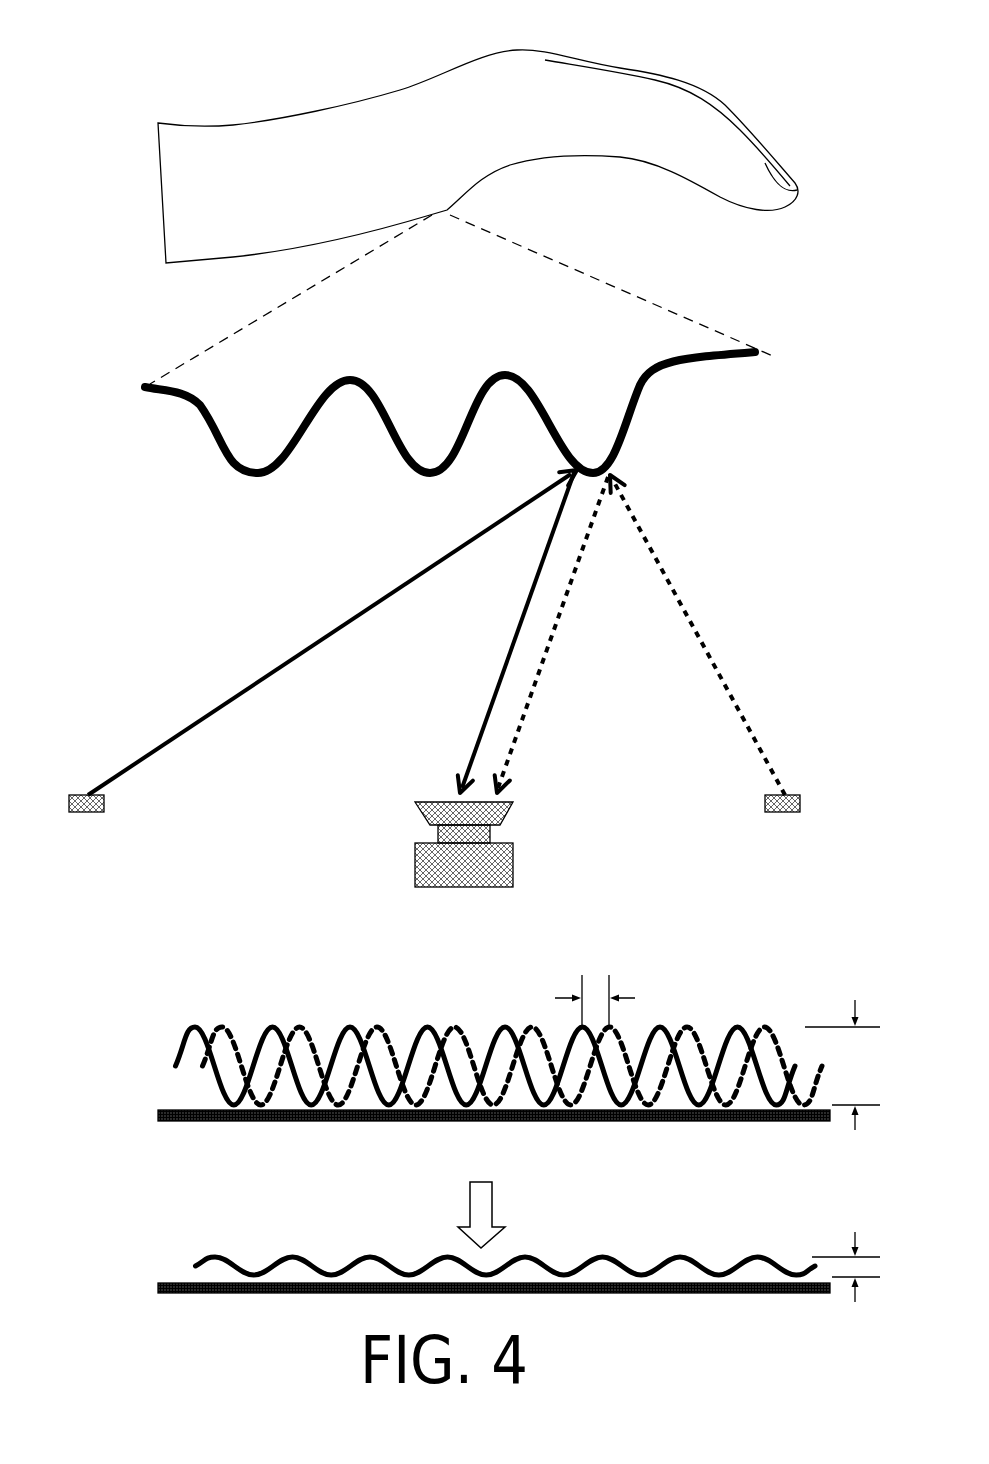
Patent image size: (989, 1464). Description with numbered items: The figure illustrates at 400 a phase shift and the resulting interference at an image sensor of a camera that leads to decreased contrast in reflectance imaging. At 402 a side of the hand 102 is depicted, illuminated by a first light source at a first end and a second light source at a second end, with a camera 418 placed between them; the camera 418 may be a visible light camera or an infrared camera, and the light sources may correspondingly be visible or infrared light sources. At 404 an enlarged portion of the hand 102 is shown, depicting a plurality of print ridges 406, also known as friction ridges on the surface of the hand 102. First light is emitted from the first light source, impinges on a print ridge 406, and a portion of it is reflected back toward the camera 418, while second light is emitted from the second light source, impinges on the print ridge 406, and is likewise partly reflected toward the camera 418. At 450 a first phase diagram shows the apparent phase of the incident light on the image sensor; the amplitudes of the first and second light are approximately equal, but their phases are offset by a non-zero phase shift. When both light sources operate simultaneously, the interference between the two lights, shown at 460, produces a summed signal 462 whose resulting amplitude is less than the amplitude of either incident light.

The phase shift and resulting interference illustration 400 is at (750, 54).
The side view of the hand 402 is at (115, 37).
The hand 102 is at (200, 143).
The enlarged portion of the hand 404 is at (115, 337).
The print ridges 406 is at (208, 476).
The camera 418 is at (428, 867).
The first phase diagram 450 is at (92, 940).
The summed signal diagram 460 is at (99, 1175).
The summed signal 462 is at (220, 1257).